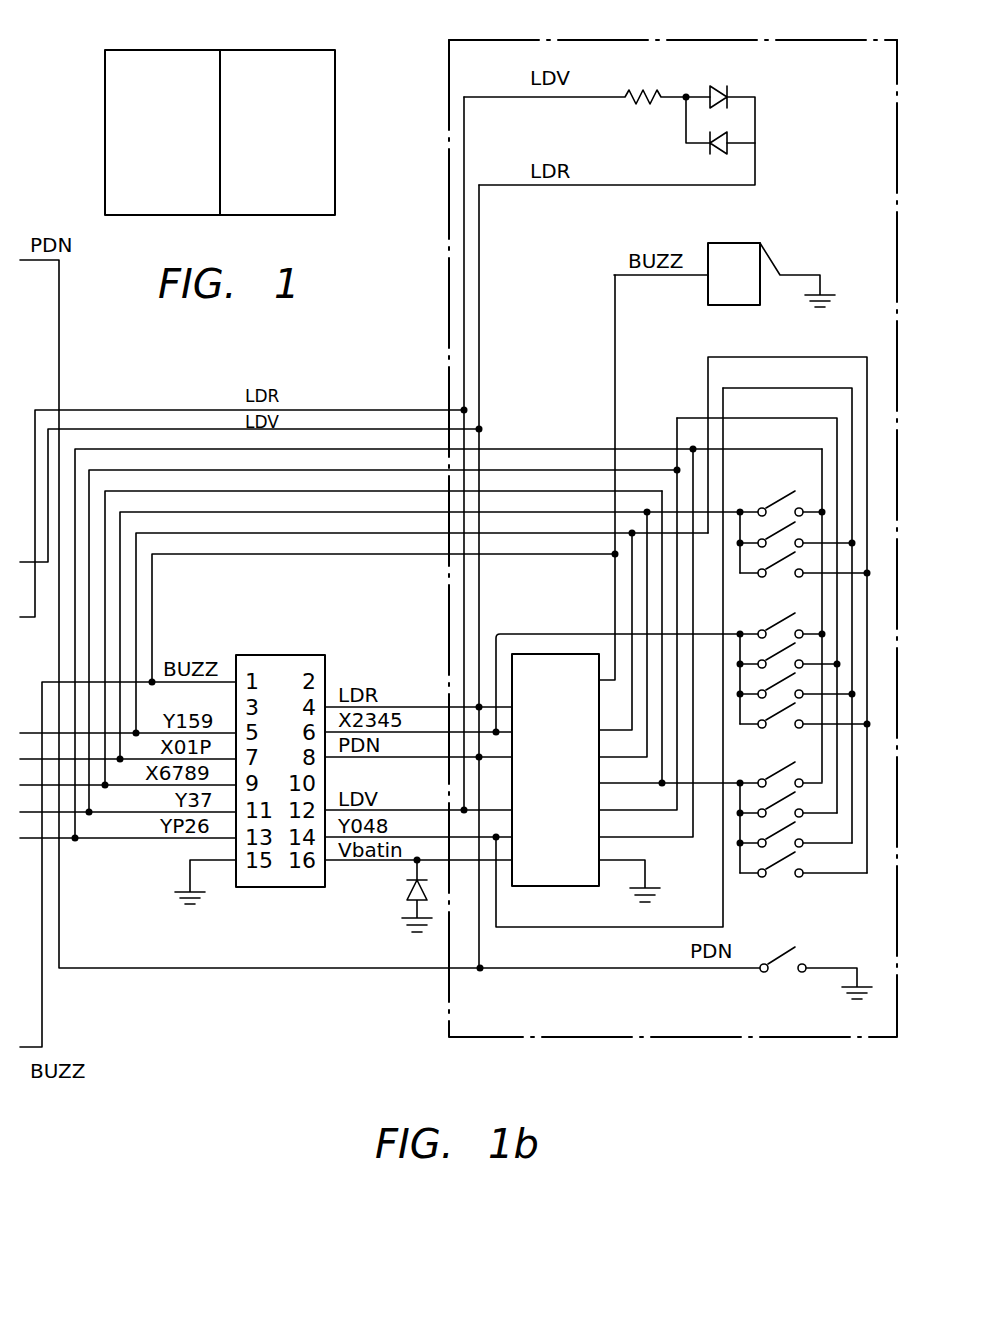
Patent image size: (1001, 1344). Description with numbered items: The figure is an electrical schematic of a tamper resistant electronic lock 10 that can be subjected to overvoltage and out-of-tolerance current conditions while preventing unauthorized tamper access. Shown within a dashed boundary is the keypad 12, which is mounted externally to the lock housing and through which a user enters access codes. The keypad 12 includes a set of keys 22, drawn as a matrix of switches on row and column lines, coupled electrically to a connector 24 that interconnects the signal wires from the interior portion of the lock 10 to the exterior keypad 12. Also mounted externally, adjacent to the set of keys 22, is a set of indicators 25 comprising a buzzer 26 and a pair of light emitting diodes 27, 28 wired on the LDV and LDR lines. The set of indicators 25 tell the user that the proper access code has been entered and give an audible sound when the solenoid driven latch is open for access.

In FIG. 1, the tamper resistant electronic lock 10 is at (164, 226).
In FIG. 1b, the keypad 12 is at (590, 1038).
In FIG. 1b, the set of keys 22 is at (690, 376).
In FIG. 1b, the connector 24 is at (557, 889).
In FIG. 1b, the set of indicators 25 is at (698, 34).
In FIG. 1b, the buzzer 26 is at (729, 248).
In FIG. 1b, the light emitting diode 27 is at (717, 83).
In FIG. 1b, the light emitting diode 28 is at (727, 157).